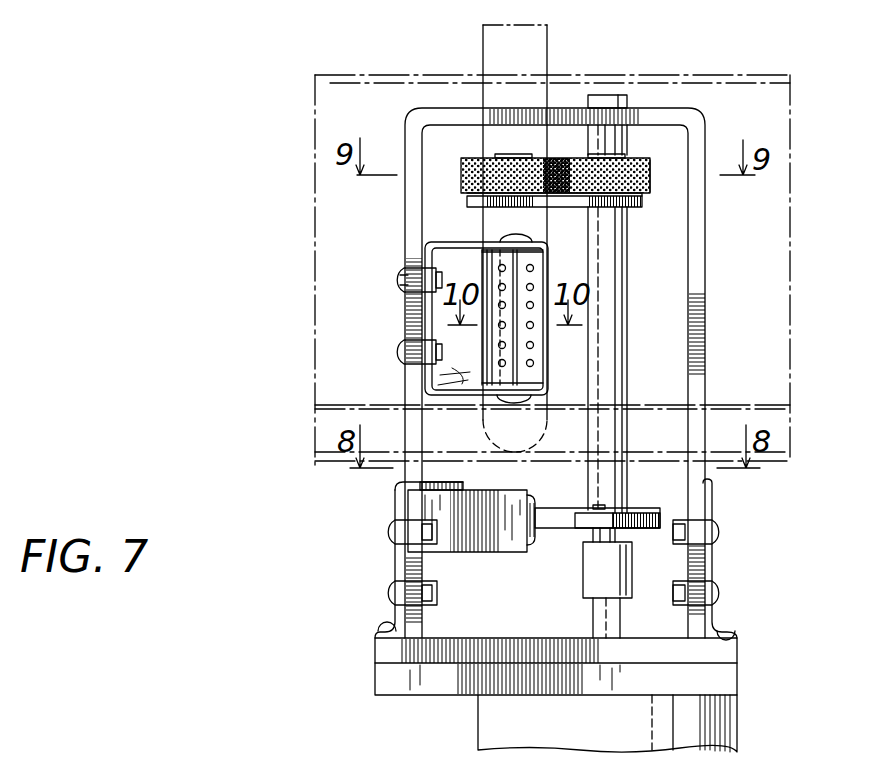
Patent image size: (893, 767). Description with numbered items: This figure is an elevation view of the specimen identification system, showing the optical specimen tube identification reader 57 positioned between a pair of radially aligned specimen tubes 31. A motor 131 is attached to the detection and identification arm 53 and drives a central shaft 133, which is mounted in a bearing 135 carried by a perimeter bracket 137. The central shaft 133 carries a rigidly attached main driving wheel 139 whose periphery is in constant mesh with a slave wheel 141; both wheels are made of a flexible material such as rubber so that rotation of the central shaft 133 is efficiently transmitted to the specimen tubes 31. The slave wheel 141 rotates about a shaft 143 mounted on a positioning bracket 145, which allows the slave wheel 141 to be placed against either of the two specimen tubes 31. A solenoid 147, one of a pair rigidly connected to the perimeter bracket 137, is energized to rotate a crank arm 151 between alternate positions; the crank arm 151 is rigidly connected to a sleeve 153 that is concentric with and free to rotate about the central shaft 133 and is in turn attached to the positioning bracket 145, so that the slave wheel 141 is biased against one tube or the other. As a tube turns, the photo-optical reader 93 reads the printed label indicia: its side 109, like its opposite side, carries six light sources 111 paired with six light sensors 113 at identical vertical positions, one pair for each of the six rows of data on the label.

The specimen tube 31 is at (556, 52).
The optical specimen tube identification reader 57 is at (690, 92).
The bearing 135 is at (618, 96).
The central shaft 133 is at (612, 148).
The perimeter bracket 137 is at (405, 225).
The shaft 143 is at (518, 157).
The slave wheel 141 is at (497, 180).
The main driving wheel 139 is at (650, 187).
The positioning bracket 145 is at (640, 209).
The side of the reader 109 is at (540, 263).
The light sources 111 is at (500, 346).
The light sensors 113 is at (533, 307).
The sleeve 153 is at (628, 348).
The photo-optical reader 93 is at (531, 373).
The crank arm 151 is at (628, 510).
The solenoid 147 is at (472, 553).
The detection and identification arm 53 is at (722, 645).
The motor 131 is at (637, 732).